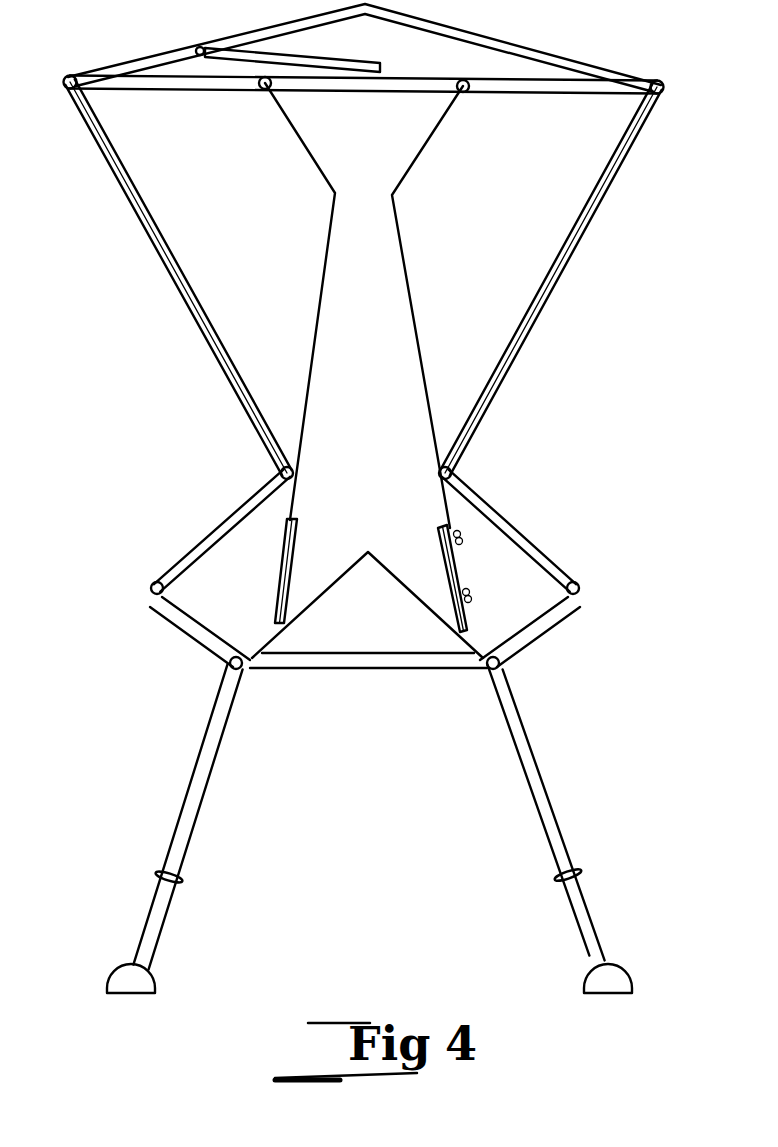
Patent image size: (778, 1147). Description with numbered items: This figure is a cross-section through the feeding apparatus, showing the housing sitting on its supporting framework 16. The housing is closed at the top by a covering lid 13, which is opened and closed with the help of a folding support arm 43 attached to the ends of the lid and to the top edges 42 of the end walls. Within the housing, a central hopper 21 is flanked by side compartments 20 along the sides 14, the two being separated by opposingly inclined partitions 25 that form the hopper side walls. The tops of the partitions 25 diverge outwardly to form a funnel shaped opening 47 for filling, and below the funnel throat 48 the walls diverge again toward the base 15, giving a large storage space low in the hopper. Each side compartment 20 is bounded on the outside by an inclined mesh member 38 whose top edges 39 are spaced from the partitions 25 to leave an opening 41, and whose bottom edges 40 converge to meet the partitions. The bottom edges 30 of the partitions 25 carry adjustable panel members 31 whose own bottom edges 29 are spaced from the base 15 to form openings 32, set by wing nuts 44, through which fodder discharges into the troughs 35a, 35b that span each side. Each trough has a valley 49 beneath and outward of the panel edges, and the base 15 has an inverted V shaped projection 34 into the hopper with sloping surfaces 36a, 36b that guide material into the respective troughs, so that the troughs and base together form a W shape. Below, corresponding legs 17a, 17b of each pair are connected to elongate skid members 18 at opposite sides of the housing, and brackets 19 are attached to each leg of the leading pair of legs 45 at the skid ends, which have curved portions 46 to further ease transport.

The covering lid 13 is at (470, 38).
The folding support arm 43 is at (310, 52).
The top edges of the end walls 42 is at (372, 95).
The top edges of the mesh members 39 is at (66, 90).
The mesh member 38 is at (204, 357).
The sides 14 is at (155, 307).
The side compartments 20 is at (380, 196).
The partitions 25 is at (316, 333).
The central hopper 21 is at (368, 380).
The opening 41 is at (168, 108).
The curved portions 46 is at (330, 196).
The funnel shaped opening 47 is at (350, 150).
The funnel throat 48 is at (403, 196).
The bottom edges of the mesh members 40 is at (278, 473).
The bottom edges of the partition members 30 is at (292, 520).
The adjustable panel member 31 is at (298, 540).
The inverted 'V' shaped projection 34 is at (367, 548).
The base 15 is at (306, 612).
The sloping surface 36a is at (378, 560).
The sloping surface 36b is at (345, 566).
The openings 32 is at (293, 607).
The wing nuts 44 is at (468, 596).
The bottom edges of the panel members 29 is at (280, 622).
The trough 35b is at (185, 588).
The trough 35a is at (548, 620).
The supporting framework 16 is at (375, 668).
The valley 49 is at (244, 670).
The leg 17b is at (213, 790).
The leg 17a is at (517, 776).
The brackets 19 is at (157, 870).
The leading pair of legs 45 is at (572, 835).
The elongate skid member 18 is at (140, 995).